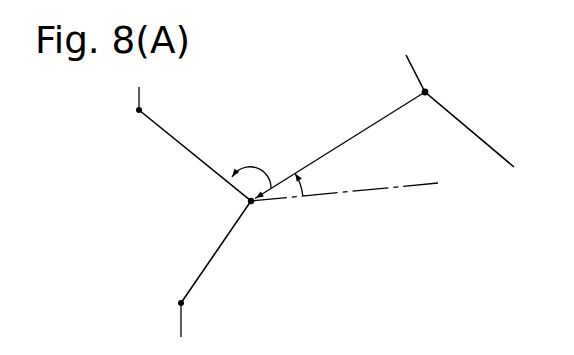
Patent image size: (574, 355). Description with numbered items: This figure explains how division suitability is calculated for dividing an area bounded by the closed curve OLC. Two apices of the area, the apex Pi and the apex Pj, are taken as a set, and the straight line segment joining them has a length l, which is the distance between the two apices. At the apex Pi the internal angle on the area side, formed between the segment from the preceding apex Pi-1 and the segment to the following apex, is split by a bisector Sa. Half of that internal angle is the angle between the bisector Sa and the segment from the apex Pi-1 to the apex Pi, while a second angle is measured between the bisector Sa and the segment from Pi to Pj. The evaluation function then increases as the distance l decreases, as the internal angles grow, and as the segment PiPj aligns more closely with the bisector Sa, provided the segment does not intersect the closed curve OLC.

The closed curve OLC is at (185, 148).
The apex Pi-1 is at (119, 109).
The apex Pi is at (237, 205).
The apex Pj is at (438, 88).
The distance between apices Pi and Pj l is at (423, 93).
The bisector Sa is at (408, 188).